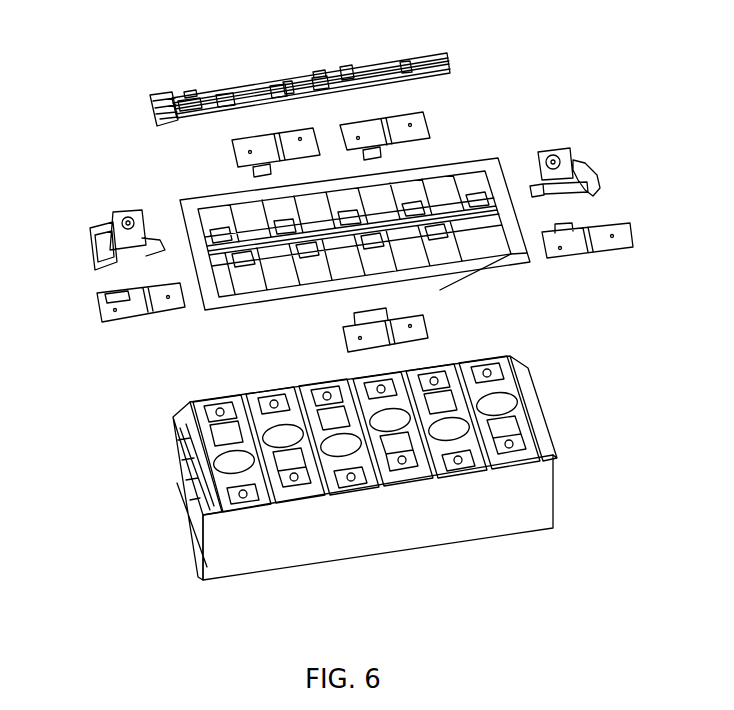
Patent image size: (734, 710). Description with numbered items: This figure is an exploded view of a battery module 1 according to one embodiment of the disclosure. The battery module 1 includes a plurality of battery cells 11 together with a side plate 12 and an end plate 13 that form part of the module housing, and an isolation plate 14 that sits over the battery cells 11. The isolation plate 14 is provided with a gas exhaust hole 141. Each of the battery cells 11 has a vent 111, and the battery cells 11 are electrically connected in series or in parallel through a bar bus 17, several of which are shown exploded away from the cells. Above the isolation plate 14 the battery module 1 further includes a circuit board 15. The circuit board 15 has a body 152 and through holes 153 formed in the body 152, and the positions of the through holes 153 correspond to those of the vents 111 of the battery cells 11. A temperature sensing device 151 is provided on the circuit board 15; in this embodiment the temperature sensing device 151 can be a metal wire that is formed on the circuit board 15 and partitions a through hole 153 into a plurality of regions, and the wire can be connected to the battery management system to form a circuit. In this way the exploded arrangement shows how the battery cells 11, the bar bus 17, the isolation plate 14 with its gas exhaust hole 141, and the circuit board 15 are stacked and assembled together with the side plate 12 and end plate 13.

The battery module 1 is at (530, 80).
The battery cells 11 is at (370, 457).
The vents 111 is at (333, 456).
The side plate 12 is at (263, 550).
The end plate 13 is at (173, 481).
The isolation plate 14 is at (487, 155).
The gas exhaust hole 141 is at (500, 263).
The circuit board 15 is at (400, 60).
The temperature sensing device 151 is at (184, 97).
The body 152 is at (378, 60).
The through holes 153 is at (190, 90).
The bar bus 17 is at (233, 157).